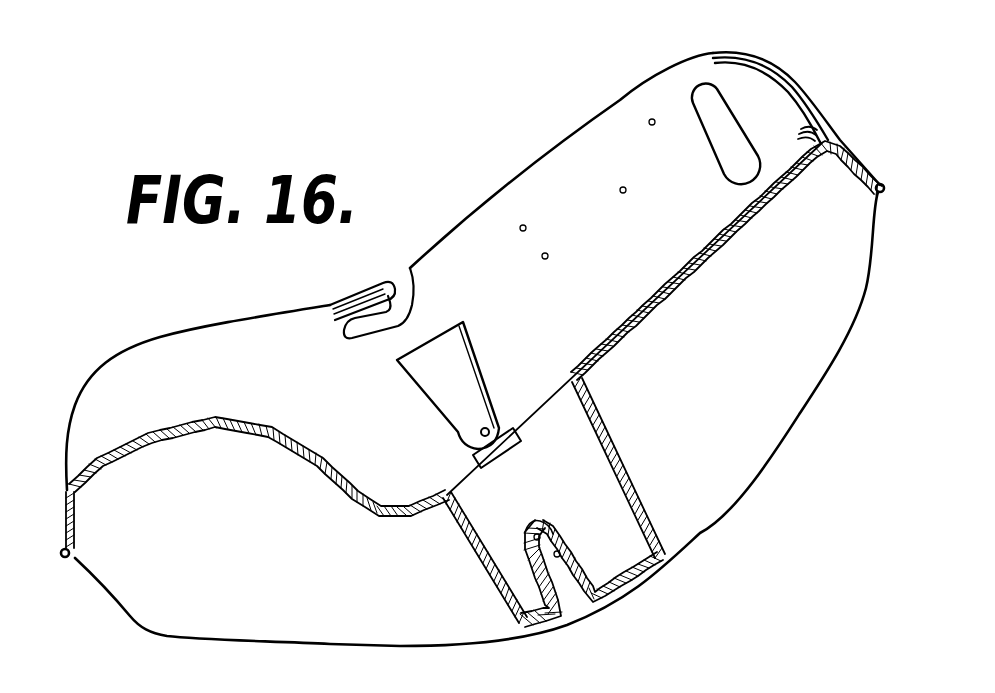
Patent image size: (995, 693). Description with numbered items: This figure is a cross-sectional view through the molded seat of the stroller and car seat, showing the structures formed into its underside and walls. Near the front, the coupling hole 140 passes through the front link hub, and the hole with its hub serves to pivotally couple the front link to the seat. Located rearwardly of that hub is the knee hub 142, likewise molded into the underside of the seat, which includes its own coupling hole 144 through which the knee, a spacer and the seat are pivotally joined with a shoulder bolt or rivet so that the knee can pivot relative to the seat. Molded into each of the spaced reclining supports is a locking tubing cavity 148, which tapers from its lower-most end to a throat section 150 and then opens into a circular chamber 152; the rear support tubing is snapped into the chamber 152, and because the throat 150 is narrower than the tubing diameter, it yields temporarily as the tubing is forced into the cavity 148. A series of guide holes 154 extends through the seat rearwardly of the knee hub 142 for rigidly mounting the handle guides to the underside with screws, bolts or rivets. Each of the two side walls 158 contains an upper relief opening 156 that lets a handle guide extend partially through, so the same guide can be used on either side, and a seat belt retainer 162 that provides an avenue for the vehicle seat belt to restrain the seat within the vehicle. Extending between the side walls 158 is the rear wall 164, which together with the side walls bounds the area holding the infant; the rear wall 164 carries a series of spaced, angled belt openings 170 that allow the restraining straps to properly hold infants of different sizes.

The coupling hole 140 is at (220, 362).
The knee hub 142 is at (477, 358).
The coupling hole 144 is at (489, 428).
The locking tubing cavity 148 is at (560, 607).
The throat section 150 is at (562, 554).
The circular chamber 152 is at (547, 532).
The guide holes 154 is at (650, 125).
The upper relief opening 156 is at (712, 85).
The side walls 158 is at (748, 76).
The seat belt retainer 162 is at (402, 280).
The rear wall 164 is at (715, 243).
The belt openings 170 is at (690, 283).